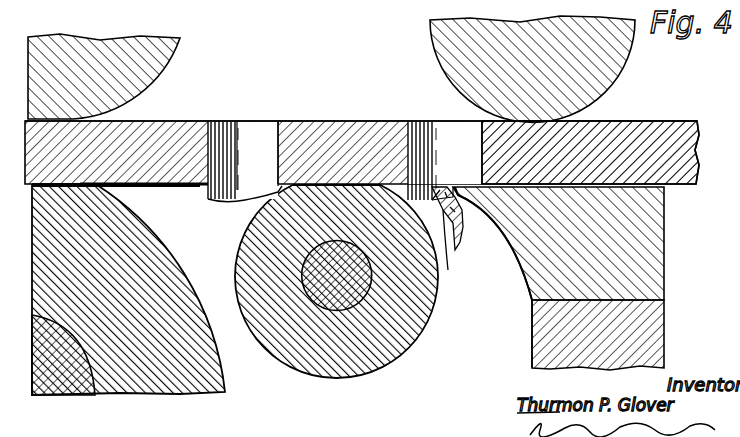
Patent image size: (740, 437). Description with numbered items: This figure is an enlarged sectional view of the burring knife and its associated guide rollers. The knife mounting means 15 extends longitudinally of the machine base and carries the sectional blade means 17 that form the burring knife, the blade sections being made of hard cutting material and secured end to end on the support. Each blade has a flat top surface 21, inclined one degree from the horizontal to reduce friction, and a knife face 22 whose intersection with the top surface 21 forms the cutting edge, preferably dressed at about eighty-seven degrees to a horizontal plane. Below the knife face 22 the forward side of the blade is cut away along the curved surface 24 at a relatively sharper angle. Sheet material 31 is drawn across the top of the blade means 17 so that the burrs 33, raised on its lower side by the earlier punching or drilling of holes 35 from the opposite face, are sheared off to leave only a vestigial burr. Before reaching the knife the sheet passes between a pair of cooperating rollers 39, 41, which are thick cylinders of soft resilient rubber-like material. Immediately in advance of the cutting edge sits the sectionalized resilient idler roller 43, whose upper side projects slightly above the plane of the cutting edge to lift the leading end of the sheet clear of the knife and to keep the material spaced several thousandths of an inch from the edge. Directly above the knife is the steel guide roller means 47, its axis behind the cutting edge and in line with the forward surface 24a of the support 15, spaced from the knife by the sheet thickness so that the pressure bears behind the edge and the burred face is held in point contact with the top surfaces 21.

The knife mounting means 15 is at (655, 345).
The blade means 17 is at (665, 201).
The flat top surface 21 is at (637, 182).
The knife face 22 is at (455, 250).
The curved surface 24 is at (522, 258).
The forward surface of the support 24a is at (532, 349).
The sheet material 31 is at (366, 146).
The burrs 33 is at (208, 198).
The holes 35 is at (253, 126).
The roller 39 is at (191, 390).
The roller 41 is at (155, 40).
The idler roller 43 is at (373, 368).
The guide roller means 47 is at (600, 84).